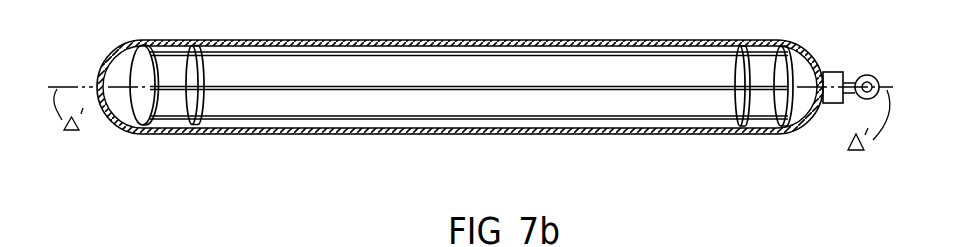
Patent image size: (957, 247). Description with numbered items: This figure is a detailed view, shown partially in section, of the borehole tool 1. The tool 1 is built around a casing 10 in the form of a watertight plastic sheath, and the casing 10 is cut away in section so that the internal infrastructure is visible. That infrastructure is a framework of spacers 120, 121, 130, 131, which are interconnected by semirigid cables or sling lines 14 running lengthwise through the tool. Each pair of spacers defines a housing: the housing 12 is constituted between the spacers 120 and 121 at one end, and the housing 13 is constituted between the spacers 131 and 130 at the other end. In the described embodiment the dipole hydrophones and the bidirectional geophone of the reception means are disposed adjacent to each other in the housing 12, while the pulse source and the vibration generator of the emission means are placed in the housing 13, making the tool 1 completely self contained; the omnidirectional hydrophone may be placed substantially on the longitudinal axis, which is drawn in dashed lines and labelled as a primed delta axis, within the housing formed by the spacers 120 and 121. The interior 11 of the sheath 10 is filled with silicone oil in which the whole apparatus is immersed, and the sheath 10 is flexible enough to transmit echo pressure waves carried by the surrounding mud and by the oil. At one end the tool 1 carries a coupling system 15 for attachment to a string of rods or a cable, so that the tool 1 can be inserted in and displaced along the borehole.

The tool 1 is at (630, 30).
The casing 10 is at (425, 40).
The interior of casing 11 is at (295, 76).
The housing 12 is at (196, 34).
The spacer 120 is at (209, 70).
The spacer 121 is at (141, 72).
The housing 13 is at (793, 35).
The spacer 130 is at (801, 66).
The spacer 131 is at (722, 73).
The sling lines 14 is at (417, 162).
The coupling system 15 is at (846, 73).